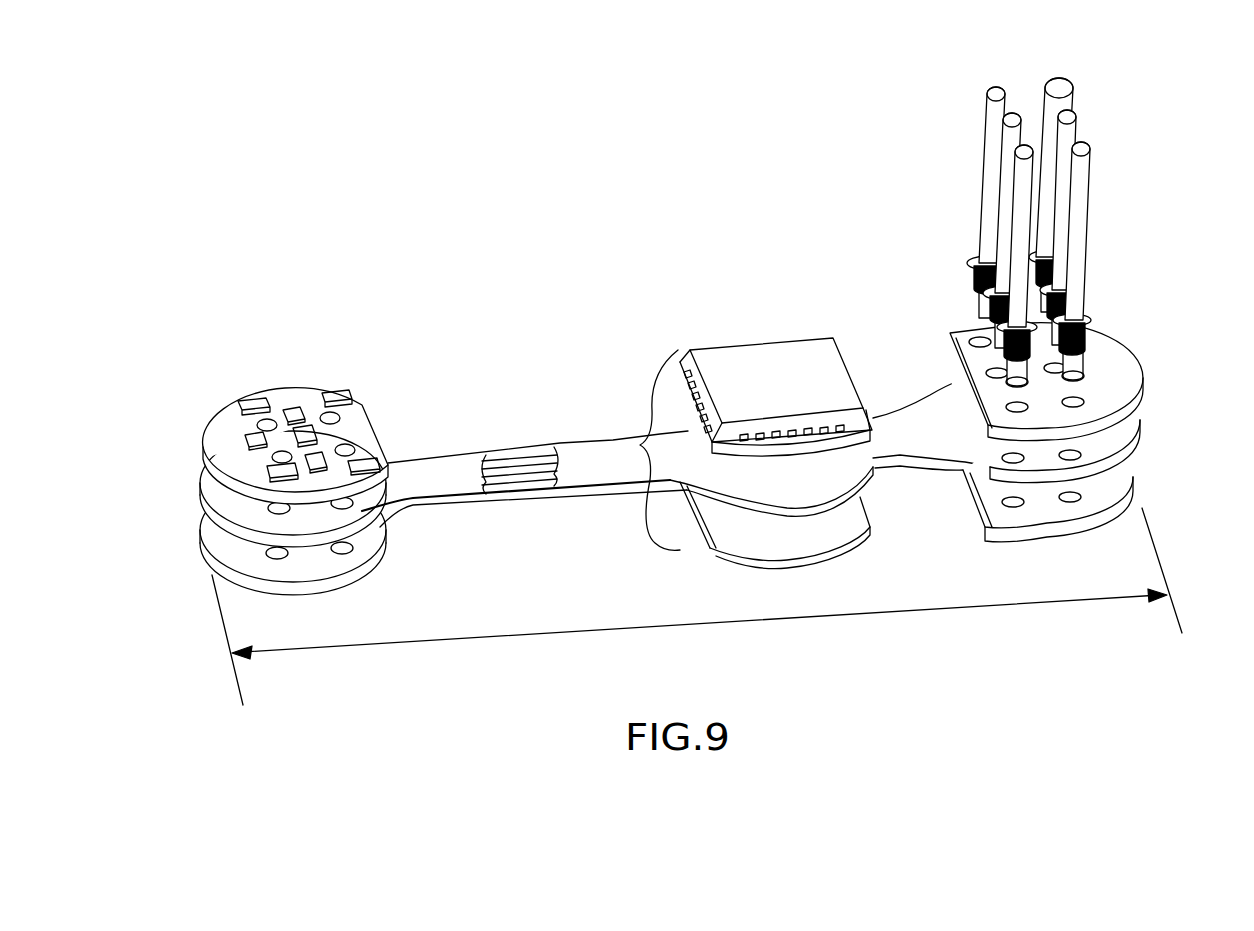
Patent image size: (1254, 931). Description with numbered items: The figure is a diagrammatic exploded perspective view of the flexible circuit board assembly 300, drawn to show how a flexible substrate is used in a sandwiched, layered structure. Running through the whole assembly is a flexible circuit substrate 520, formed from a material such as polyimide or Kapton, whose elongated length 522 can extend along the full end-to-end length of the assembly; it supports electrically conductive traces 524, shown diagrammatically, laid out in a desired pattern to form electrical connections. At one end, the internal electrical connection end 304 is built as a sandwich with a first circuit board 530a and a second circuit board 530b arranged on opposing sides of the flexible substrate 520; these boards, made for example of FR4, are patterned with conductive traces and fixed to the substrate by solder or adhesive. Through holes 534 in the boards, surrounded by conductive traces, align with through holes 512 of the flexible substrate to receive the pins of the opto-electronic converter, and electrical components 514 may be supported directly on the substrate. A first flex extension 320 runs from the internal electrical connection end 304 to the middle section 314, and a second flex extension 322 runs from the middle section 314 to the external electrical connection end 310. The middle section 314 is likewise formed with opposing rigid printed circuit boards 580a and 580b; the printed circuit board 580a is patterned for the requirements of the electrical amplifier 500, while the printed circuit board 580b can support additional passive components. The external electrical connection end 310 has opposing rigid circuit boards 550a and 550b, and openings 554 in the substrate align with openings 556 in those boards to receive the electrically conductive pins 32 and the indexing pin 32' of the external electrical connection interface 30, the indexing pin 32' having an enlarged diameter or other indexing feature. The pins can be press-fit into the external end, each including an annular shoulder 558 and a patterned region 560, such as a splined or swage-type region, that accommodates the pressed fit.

The flexible circuit board assembly 300 is at (651, 158).
The internal electrical connection end 304 is at (190, 385).
The external electrical connection end 310 is at (1150, 88).
The middle section 314 is at (640, 446).
The first flex extension 320 is at (528, 498).
The second flex extension 322 is at (919, 462).
The external electrical connection interface 30 is at (974, 171).
The electrically conductive pins 32 is at (1104, 201).
The indexing pin 32' is at (1088, 165).
The electrical amplifier 500 is at (716, 348).
The through holes of the flexible substrate 512 is at (403, 484).
The electrical components 514 is at (344, 390).
The flexible circuit substrate 520 is at (525, 457).
The elongated length 522 is at (697, 655).
The electrically conductive traces 524 is at (513, 460).
The first circuit board 530a is at (277, 386).
The second circuit board 530b is at (378, 588).
The through holes 534 is at (343, 420).
The rigid circuit board 550a is at (1100, 340).
The rigid circuit board 550b is at (1108, 530).
The openings 554 is at (1003, 457).
The openings 556 is at (1015, 510).
The annular shoulder 558 is at (1093, 326).
The patterned region 560 is at (1087, 357).
The printed circuit board 580a is at (718, 463).
The printed circuit board 580b is at (748, 562).